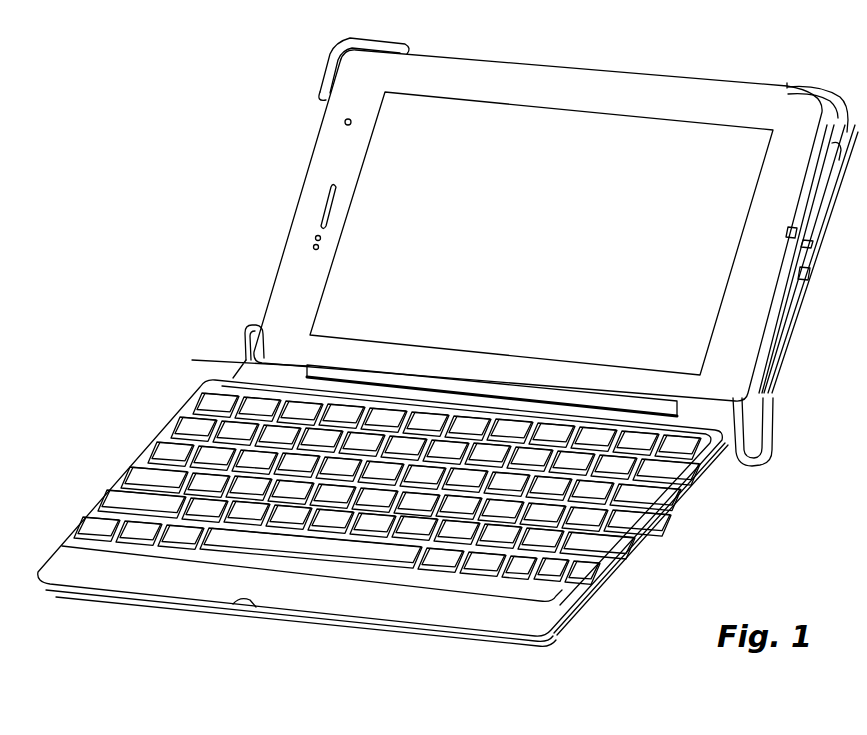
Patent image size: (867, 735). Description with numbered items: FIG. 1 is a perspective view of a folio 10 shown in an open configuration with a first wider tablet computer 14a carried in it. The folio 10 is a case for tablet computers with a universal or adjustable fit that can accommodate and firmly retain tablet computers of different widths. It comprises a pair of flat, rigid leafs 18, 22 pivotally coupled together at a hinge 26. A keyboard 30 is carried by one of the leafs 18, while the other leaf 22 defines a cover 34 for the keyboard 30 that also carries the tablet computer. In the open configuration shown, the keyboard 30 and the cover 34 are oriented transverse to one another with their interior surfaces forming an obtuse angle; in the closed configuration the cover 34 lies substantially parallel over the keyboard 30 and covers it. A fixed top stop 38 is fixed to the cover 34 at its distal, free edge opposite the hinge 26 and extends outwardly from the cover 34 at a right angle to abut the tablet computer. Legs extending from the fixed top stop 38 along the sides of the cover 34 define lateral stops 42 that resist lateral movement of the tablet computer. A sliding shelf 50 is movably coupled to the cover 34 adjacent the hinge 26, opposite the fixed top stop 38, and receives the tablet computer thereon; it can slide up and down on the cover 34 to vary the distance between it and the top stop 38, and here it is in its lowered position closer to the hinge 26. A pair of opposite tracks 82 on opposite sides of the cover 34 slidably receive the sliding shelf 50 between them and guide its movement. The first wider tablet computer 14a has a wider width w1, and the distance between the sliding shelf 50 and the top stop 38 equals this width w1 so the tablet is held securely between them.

The folio 10 is at (727, 490).
The first wider tablet computer 14a is at (577, 87).
The leaf 18 is at (140, 455).
The leaf 22 is at (822, 225).
The hinge 26 is at (307, 387).
The keyboard 30 is at (237, 540).
The cover 34 is at (790, 330).
The fixed top stop 38 is at (817, 83).
The lateral stops 42 is at (327, 58).
The sliding shelf 50 is at (465, 383).
The opposite tracks 82 is at (763, 408).
The wider width w1 is at (633, 393).